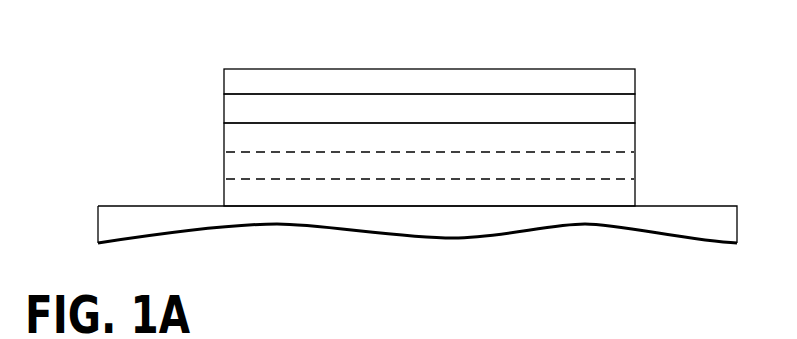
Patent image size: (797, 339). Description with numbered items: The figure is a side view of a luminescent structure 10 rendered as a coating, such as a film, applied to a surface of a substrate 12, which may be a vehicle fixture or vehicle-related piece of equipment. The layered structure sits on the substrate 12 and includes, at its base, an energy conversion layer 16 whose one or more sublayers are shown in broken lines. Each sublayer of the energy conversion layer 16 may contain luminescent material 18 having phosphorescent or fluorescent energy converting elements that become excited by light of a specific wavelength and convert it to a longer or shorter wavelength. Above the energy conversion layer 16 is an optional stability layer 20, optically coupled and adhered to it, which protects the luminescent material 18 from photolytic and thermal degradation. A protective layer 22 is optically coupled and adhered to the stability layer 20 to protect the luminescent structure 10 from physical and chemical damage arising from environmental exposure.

The luminescent structure 10 is at (573, 42).
The substrate 12 is at (680, 205).
The energy conversion layer 16 is at (224, 163).
The luminescent material 18 is at (590, 165).
The stability layer 20 is at (224, 108).
The protective layer 22 is at (317, 69).